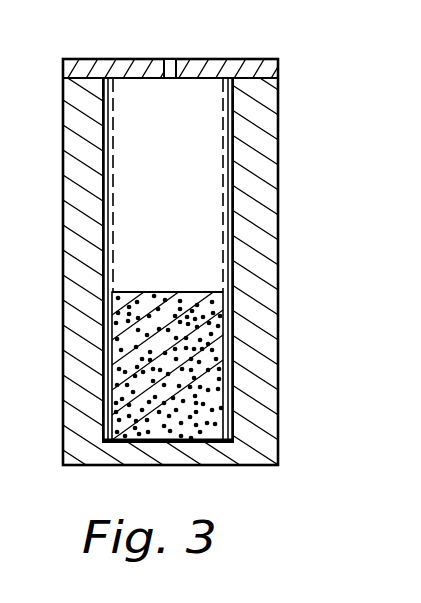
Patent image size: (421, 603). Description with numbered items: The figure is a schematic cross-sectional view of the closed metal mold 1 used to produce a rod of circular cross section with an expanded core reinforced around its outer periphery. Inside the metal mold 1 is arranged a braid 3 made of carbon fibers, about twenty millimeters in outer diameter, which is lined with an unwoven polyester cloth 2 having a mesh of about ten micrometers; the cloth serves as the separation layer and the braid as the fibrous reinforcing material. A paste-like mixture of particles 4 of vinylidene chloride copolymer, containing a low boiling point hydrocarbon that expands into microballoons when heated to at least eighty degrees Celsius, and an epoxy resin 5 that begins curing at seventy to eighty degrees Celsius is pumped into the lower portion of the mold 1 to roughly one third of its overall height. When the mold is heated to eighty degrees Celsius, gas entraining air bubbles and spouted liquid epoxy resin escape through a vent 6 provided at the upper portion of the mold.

The metal mold 1 is at (262, 208).
The unwoven polyester cloth 2 is at (223, 133).
The braid 3 is at (234, 120).
The particles 4 is at (200, 328).
The epoxy resin 5 is at (160, 292).
The vent 6 is at (175, 65).